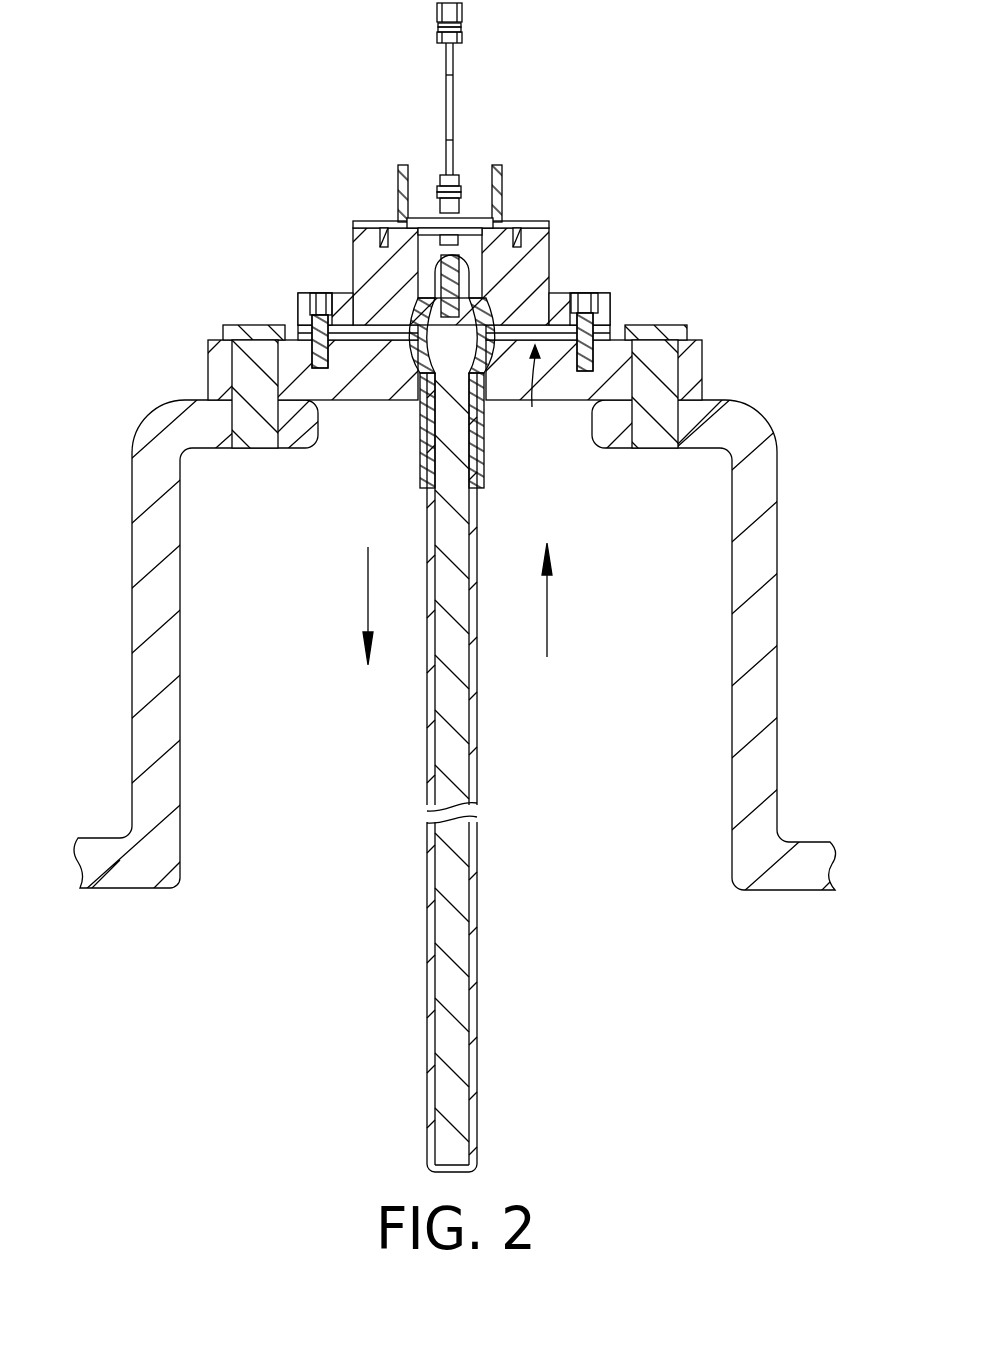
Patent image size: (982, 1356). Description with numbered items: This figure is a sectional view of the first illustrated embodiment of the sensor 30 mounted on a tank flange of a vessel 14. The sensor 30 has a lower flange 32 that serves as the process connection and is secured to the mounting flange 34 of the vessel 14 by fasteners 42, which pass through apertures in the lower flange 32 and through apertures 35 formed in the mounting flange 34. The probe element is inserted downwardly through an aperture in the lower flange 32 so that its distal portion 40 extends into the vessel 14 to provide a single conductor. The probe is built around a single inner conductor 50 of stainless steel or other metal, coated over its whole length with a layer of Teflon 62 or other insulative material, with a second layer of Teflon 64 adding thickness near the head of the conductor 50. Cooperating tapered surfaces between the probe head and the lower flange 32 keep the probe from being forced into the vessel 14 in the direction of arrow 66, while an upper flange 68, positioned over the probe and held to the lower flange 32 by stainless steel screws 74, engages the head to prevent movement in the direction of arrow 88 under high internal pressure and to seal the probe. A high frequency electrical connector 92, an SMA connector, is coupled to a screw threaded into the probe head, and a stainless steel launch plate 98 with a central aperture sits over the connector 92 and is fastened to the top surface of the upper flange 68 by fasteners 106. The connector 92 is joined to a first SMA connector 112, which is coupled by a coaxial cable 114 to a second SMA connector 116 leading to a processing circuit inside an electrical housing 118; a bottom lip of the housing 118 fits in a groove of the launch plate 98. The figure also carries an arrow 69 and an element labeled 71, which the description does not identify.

The vessel 14 is at (103, 875).
The sensor 30 is at (282, 194).
The lower flange 32 is at (190, 366).
The mounting flange 34 is at (762, 532).
The apertures 35 is at (242, 430).
The distal portion 40 is at (508, 1145).
The fasteners 42 is at (257, 360).
The inner conductor 50 is at (453, 903).
The Teflon layer 62 is at (430, 1018).
The second layer of Teflon 64 is at (420, 460).
The arrow 66 is at (368, 592).
The upper flange 68 is at (532, 270).
The direction arrow 69 is at (543, 400).
The cap screw 71 is at (312, 335).
The stainless steel screws 74 is at (585, 305).
The arrow 88 is at (547, 607).
The high frequency electrical connector 92 is at (420, 222).
The launch plate 98 is at (542, 225).
The fasteners 106 is at (512, 228).
The first SMA connector 112 is at (432, 170).
The coaxial cable 114 is at (454, 93).
The second SMA connector 116 is at (462, 12).
The electrical housing 118 is at (500, 168).